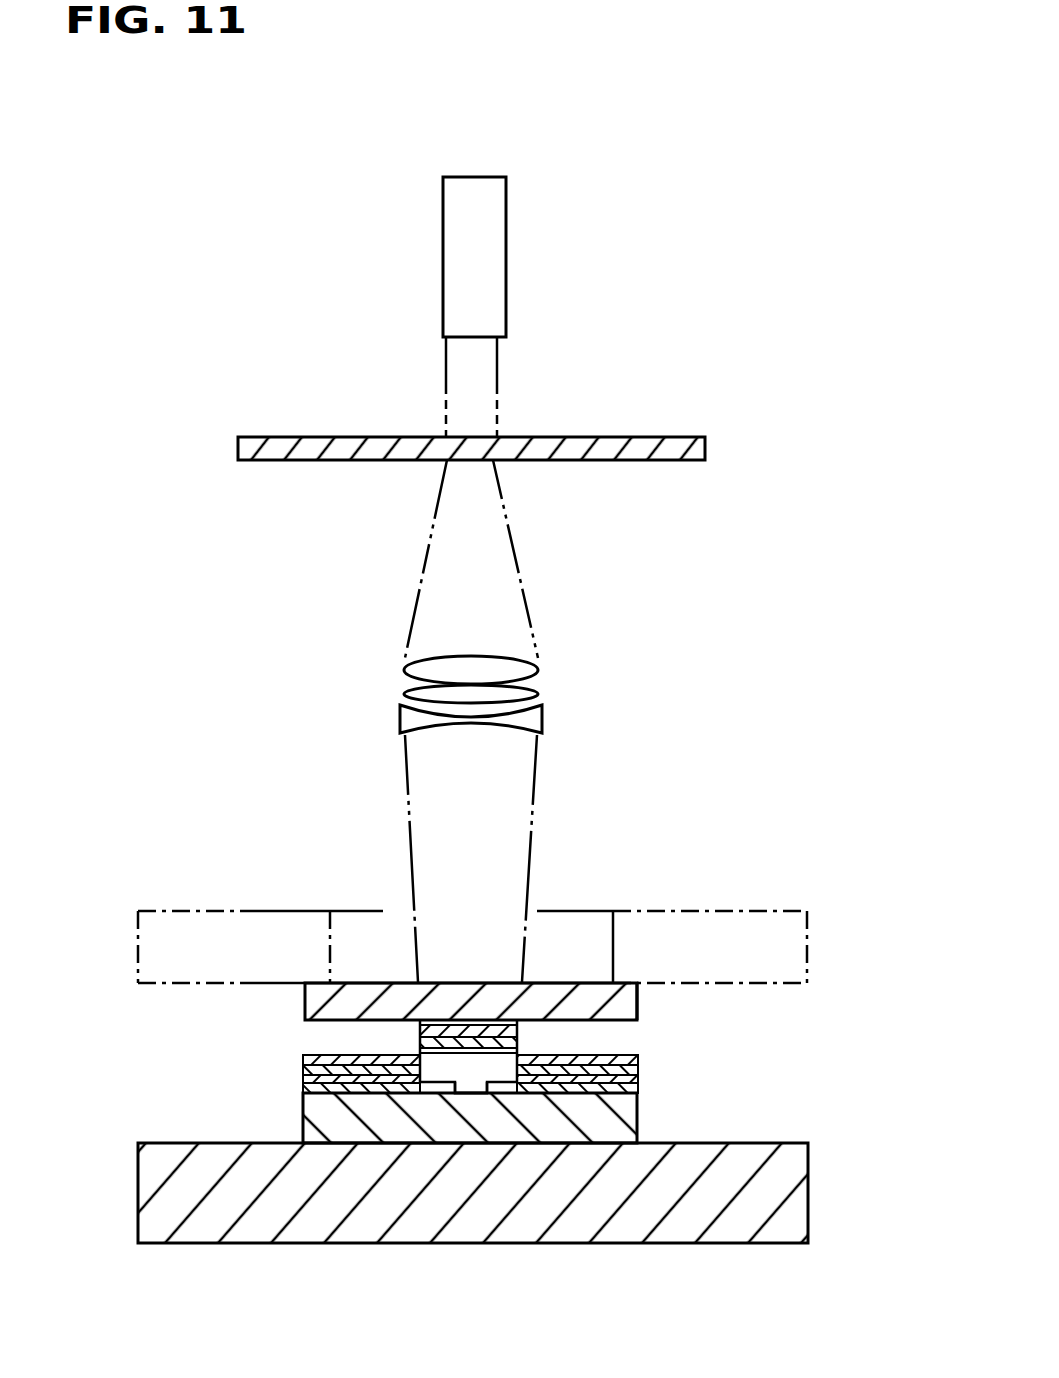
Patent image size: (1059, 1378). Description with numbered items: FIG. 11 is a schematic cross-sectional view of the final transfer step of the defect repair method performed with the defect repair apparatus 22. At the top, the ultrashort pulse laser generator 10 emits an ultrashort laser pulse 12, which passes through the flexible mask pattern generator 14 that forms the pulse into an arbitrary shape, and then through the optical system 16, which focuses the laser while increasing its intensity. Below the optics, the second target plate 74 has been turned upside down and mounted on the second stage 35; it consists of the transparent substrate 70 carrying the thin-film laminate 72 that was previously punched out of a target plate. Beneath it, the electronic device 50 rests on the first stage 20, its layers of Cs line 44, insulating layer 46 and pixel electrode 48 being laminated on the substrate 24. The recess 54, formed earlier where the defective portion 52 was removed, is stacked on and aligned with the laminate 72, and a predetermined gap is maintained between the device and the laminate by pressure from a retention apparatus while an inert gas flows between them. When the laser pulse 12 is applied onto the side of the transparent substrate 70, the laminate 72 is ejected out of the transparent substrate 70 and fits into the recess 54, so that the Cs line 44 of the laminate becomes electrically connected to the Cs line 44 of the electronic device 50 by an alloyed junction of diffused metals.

The ultrashort pulse laser generator 10 is at (492, 258).
The ultrashort laser pulse 12 is at (484, 371).
The flexible mask pattern generator 14 is at (660, 447).
The optical system 16 is at (570, 697).
The first stage 20 is at (768, 1141).
The defect repair apparatus 22 is at (690, 315).
The substrate 24 is at (622, 1117).
The second stage 35 is at (697, 908).
The Cs line 44 is at (517, 1048).
The insulating layer 46 is at (500, 1030).
The pixel electrode 48 is at (458, 1030).
The electronic device 50 is at (698, 1025).
The defective portion 52 is at (472, 1093).
The recess 54 is at (424, 1075).
The transparent substrate 70 is at (578, 995).
The thin-film laminate 72 is at (418, 1047).
The second target plate 74 is at (640, 981).